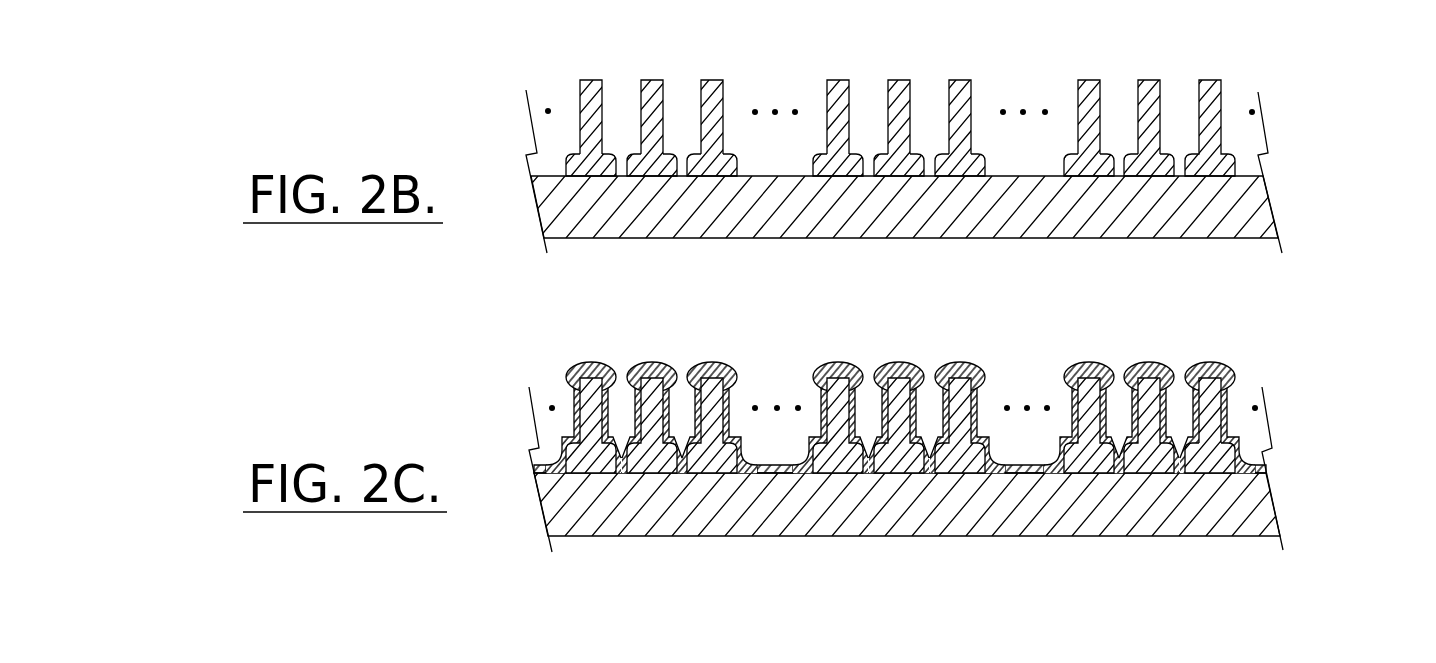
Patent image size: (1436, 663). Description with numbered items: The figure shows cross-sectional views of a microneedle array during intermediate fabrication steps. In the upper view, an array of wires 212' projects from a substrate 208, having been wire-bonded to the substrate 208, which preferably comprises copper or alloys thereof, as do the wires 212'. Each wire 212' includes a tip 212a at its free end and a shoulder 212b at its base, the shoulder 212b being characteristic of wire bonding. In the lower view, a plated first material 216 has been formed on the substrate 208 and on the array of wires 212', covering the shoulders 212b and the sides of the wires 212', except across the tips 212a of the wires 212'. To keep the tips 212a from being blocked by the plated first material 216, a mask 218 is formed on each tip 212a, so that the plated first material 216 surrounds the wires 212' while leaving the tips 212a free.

In FIG. 2B, the substrate 208 is at (1270, 203).
In FIG. 2B, the tip 212a is at (587, 83).
In FIG. 2C, the tip 212a is at (1218, 366).
In FIG. 2B, the shoulder 212b is at (568, 165).
In FIG. 2C, the shoulder 212b is at (1207, 467).
In FIG. 2B, the wire 212' is at (1248, 111).
In FIG. 2C, the wire 212' is at (1263, 430).
In FIG. 2C, the plated first material 216 is at (1262, 472).
In FIG. 2C, the mask 218 is at (1203, 365).